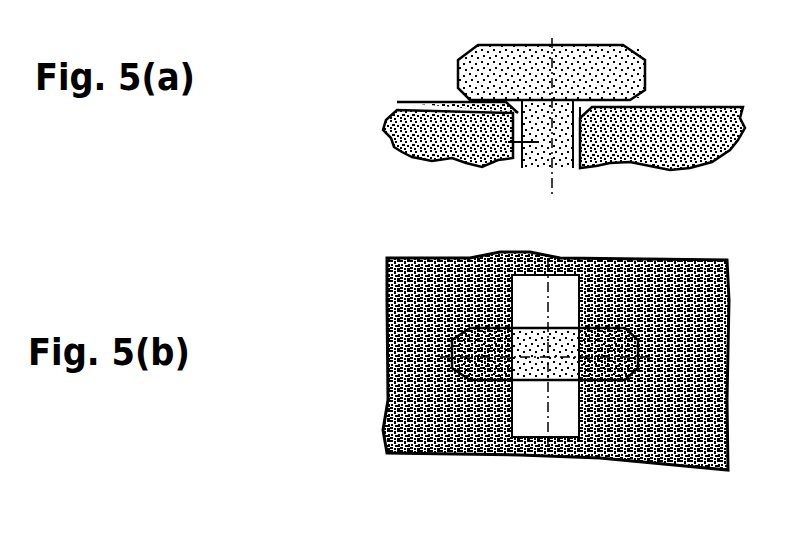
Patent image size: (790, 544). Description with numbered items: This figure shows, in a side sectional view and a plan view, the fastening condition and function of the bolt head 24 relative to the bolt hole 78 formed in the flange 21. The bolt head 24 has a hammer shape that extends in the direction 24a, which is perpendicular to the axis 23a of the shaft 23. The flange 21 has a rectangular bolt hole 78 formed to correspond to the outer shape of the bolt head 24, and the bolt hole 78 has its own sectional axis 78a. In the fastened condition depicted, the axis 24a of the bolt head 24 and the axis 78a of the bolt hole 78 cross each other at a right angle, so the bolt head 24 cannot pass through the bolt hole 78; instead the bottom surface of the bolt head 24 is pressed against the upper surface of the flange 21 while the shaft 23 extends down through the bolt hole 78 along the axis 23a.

In FIG. 5A, the flange 21 is at (392, 105).
In FIG. 5A, the shaft 23 is at (510, 158).
In FIG. 5A, the axis of the shaft 23a is at (555, 58).
In FIG. 5A, the bolt head 24 is at (455, 72).
In FIG. 5B, the bolt head 24 is at (455, 335).
In FIG. 5B, the axis of the bolt head 24a is at (457, 375).
In FIG. 5A, the bolt hole 78 is at (582, 168).
In FIG. 5B, the bolt hole 78 is at (513, 442).
In FIG. 5B, the axis of the bolt hole 78a is at (548, 445).